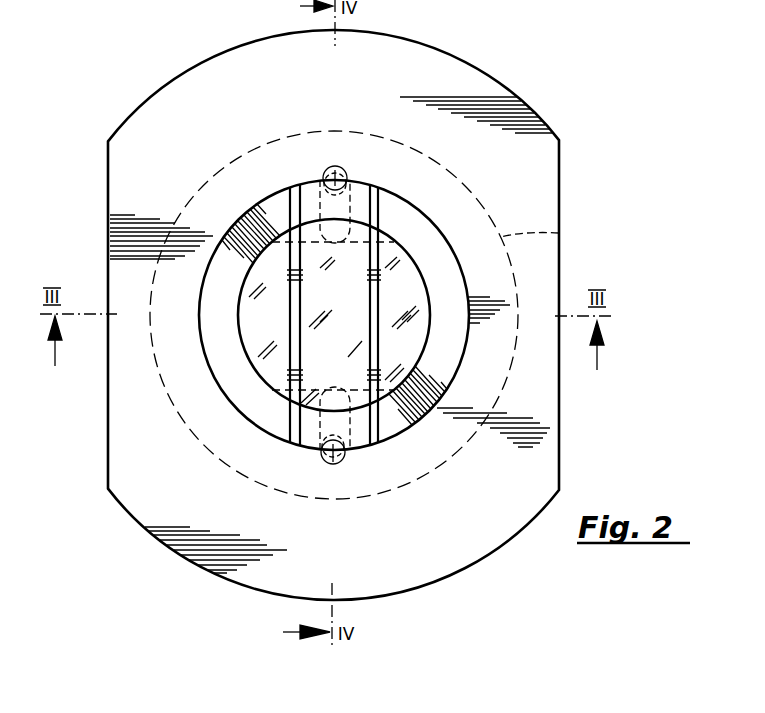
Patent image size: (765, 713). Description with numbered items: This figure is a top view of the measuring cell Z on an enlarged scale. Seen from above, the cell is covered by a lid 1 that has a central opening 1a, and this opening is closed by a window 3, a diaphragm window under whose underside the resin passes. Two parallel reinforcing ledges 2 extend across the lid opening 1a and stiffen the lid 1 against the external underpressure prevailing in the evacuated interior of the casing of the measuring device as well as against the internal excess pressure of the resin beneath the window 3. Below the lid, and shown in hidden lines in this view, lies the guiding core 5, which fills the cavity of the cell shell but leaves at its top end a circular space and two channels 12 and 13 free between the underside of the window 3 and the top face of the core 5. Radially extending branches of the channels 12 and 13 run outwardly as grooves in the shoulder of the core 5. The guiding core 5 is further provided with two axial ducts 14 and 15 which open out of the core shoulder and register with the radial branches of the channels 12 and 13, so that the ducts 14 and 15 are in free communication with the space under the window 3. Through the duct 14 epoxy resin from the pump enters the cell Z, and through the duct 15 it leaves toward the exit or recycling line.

The lid 1 is at (545, 143).
The central opening 1a is at (430, 313).
The reinforcing ledges 2 is at (377, 215).
The window 3 is at (416, 273).
The guiding core 5 is at (558, 233).
The channel 12 is at (350, 238).
The channel 13 is at (327, 397).
The axial duct 14 is at (336, 168).
The axial duct 15 is at (333, 465).
The measuring cell Z is at (530, 99).